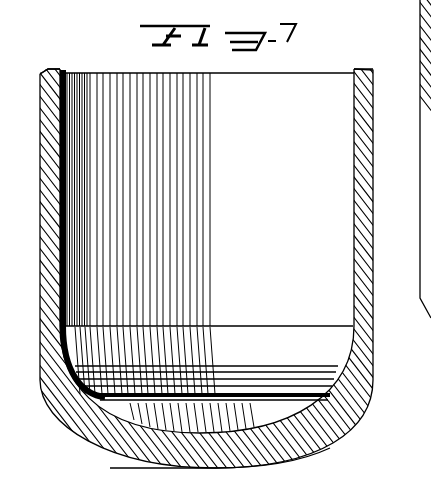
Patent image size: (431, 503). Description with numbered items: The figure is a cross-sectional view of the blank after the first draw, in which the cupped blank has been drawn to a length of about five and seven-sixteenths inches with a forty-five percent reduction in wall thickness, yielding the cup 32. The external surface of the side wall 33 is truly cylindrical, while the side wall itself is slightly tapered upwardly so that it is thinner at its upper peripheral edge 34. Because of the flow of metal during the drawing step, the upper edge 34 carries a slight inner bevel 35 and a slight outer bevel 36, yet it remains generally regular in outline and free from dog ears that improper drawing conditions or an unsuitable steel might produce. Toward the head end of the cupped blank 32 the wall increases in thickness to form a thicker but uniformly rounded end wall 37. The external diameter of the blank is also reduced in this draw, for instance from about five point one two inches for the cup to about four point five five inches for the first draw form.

The cup 32 is at (379, 272).
The side wall 33 is at (372, 175).
The upper peripheral edge 34 is at (373, 70).
The inner bevel 35 is at (59, 70).
The outer bevel 36 is at (49, 71).
The end wall 37 is at (231, 456).